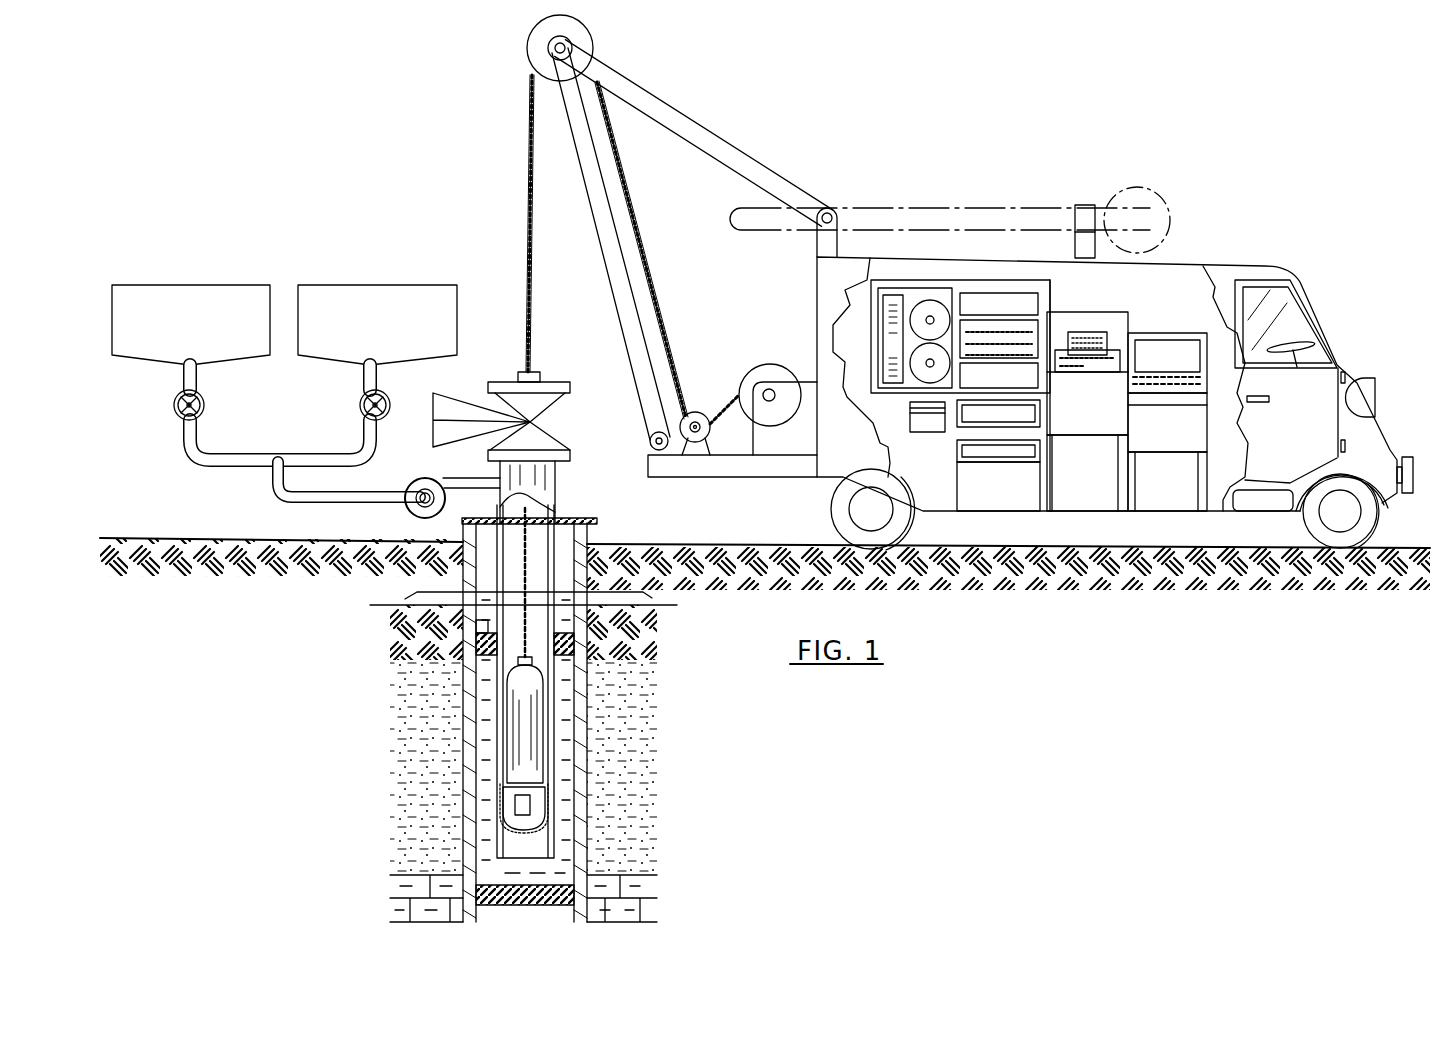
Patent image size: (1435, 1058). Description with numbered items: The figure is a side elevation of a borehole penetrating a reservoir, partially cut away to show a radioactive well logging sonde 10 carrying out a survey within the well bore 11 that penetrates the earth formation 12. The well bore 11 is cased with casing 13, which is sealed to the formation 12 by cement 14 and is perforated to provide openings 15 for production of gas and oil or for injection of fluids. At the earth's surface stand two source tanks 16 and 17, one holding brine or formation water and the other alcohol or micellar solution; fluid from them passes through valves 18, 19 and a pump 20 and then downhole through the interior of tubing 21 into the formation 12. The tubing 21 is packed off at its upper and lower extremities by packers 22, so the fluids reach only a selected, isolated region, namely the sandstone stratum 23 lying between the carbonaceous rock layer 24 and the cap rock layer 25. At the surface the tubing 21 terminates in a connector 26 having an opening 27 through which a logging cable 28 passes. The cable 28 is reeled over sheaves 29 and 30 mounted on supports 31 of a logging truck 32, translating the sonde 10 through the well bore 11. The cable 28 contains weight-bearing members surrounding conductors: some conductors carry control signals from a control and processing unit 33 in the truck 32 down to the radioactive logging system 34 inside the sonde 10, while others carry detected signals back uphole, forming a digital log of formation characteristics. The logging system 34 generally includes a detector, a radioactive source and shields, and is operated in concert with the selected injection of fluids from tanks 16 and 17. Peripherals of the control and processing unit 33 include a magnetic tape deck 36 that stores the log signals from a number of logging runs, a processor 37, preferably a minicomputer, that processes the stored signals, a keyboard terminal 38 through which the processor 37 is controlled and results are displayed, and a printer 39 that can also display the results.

The radioactive well logging sonde 10 is at (530, 690).
The well bore 11 is at (467, 713).
The earth formation 12 is at (668, 738).
The casing 13 is at (593, 540).
The cement 14 is at (613, 570).
The openings 15 is at (463, 780).
The source tank 16 is at (190, 285).
The source tank 17 is at (375, 285).
The valve 18 is at (203, 397).
The valve 19 is at (362, 397).
The pump 20 is at (419, 478).
The tubing 21 is at (540, 527).
The packers 22 is at (476, 622).
The sandstone stratum 23 is at (640, 768).
The carbonaceous rock layer 24 is at (392, 895).
The cap rock layer 25 is at (638, 633).
The connector 26 is at (557, 412).
The opening 27 is at (535, 372).
The logging cable 28 is at (530, 173).
The sheave 29 is at (527, 47).
The sheave 30 is at (700, 413).
The supports 31 is at (652, 110).
The logging truck 32 is at (1057, 258).
The control and processing unit 33 is at (1118, 293).
The radioactive logging system 34 is at (523, 798).
The magnetic tape deck 36 is at (918, 297).
The processor 37 is at (977, 302).
The keyboard terminal 38 is at (1173, 347).
The printer 39 is at (1061, 318).